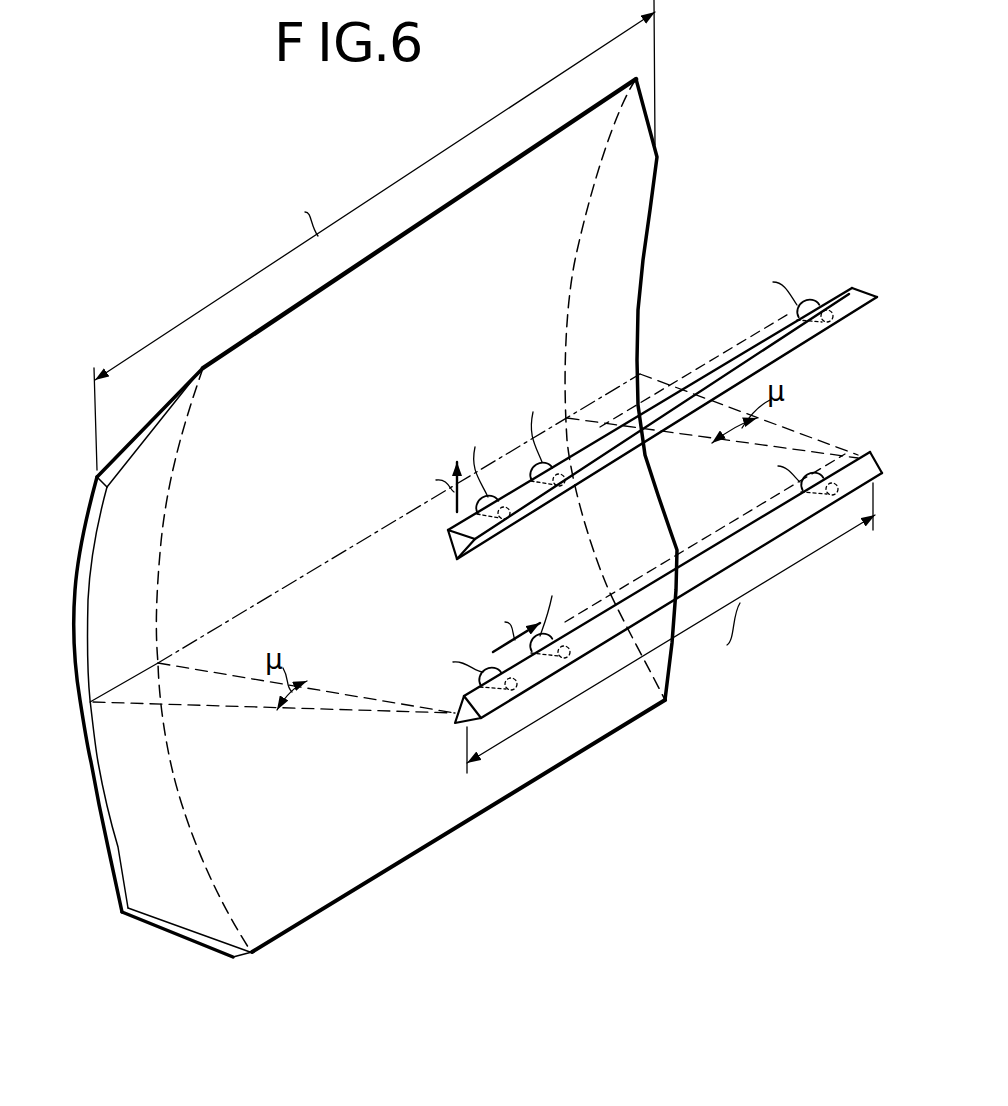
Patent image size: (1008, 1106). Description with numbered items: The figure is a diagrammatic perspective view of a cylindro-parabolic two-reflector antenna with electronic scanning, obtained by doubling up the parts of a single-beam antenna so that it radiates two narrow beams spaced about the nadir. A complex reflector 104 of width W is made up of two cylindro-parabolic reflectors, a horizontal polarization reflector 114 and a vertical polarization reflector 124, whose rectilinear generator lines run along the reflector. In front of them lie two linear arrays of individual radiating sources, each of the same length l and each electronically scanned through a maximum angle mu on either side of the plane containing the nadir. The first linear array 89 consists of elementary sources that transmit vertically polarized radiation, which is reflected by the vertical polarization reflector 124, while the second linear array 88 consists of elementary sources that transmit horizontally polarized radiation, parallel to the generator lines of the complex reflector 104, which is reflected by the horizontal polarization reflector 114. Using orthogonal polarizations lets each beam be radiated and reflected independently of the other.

The complex reflector 104 is at (657, 262).
The horizontal polarization reflector 114 is at (95, 552).
The vertical polarization reflector 124 is at (75, 547).
The second linear array 88 is at (650, 593).
The first linear array 89 is at (727, 377).